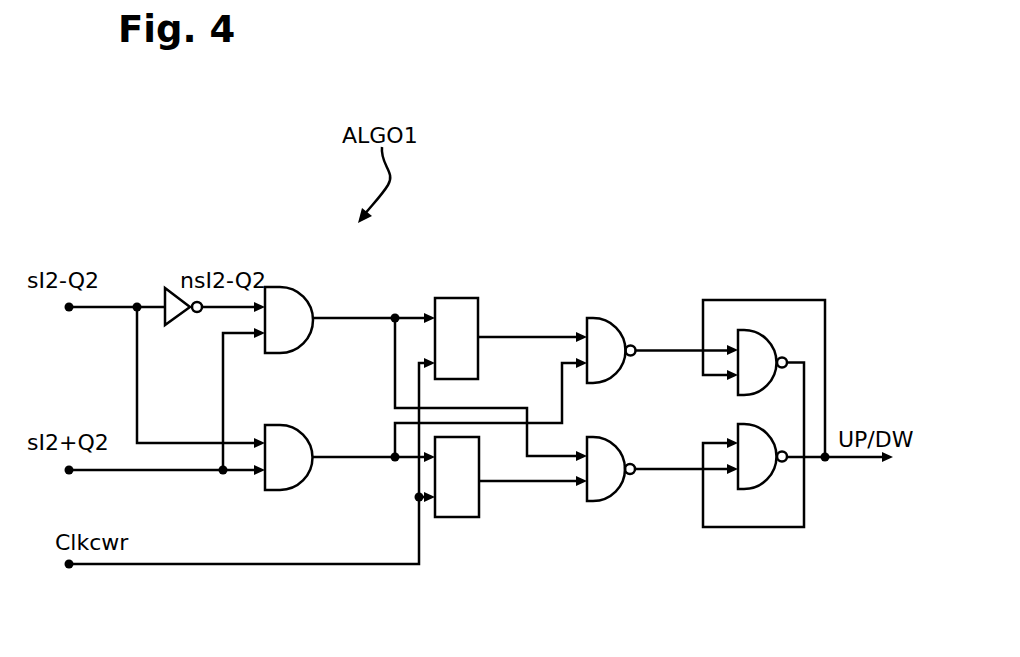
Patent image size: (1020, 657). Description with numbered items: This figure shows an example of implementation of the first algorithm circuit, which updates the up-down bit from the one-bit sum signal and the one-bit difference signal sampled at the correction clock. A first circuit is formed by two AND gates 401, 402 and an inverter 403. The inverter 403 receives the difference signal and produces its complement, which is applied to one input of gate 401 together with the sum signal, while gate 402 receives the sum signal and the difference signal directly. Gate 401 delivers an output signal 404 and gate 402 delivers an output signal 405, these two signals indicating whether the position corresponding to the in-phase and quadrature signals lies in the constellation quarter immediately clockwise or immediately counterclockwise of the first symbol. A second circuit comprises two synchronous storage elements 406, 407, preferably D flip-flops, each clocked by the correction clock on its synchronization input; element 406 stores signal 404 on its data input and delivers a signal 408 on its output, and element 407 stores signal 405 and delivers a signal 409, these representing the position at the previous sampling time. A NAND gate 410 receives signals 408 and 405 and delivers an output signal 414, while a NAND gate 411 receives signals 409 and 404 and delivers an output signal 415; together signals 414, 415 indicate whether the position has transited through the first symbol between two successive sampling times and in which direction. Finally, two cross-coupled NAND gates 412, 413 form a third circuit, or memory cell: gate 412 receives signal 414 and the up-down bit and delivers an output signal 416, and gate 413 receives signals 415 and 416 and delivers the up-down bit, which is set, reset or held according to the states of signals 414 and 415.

The AND gate 401 is at (290, 298).
The AND gate 402 is at (287, 462).
The inverter 403 is at (172, 285).
The output signal 404 is at (350, 317).
The output signal 405 is at (355, 458).
The synchronous storage element 406 is at (457, 300).
The synchronous storage element 407 is at (452, 513).
The output signal 408 is at (530, 335).
The output signal 409 is at (527, 485).
The NAND gate 410 is at (600, 327).
The NAND gate 411 is at (597, 497).
The NAND gate 412 is at (755, 338).
The NAND gate 413 is at (752, 485).
The output signal 414 is at (668, 348).
The output signal 415 is at (662, 473).
The output signal 416 is at (805, 403).